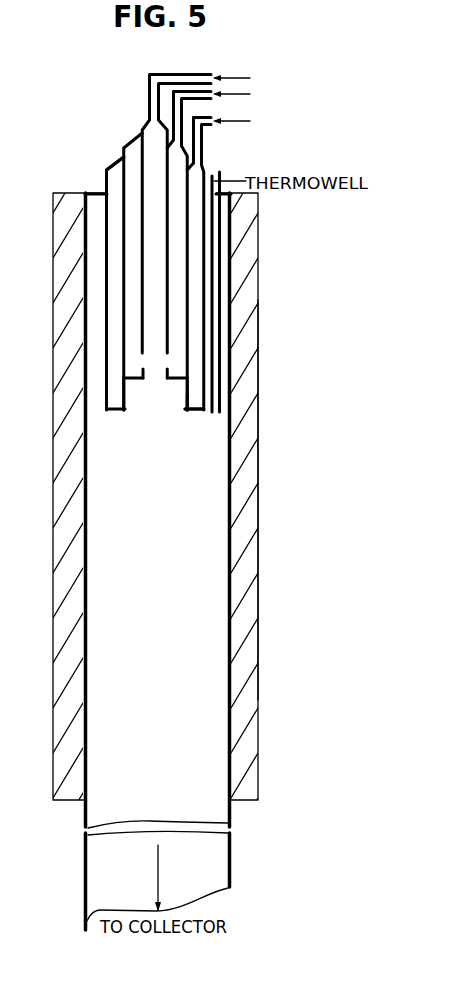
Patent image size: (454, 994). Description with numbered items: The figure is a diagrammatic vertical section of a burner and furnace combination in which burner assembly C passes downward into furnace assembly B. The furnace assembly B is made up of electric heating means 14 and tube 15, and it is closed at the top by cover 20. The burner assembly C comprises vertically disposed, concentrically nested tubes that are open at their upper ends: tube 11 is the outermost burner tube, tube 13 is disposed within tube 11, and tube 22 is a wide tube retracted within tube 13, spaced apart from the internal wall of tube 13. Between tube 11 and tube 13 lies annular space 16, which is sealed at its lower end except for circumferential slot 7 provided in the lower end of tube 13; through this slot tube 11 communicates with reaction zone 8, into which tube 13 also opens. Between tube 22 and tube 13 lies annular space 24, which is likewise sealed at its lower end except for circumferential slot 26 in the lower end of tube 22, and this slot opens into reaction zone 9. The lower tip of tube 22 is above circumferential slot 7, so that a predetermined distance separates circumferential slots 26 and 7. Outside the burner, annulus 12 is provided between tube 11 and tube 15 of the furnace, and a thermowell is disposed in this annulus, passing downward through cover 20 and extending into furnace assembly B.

The circumferential slot 7 is at (184, 403).
The reaction zone 8 is at (156, 401).
The reaction zone 9 is at (156, 381).
The tube 11 is at (125, 396).
The annulus 12 is at (98, 248).
The tube 13 is at (125, 341).
The electric heating means 14 is at (258, 422).
The tube 15 is at (227, 478).
The annular space 16 is at (117, 315).
The cover 20 is at (88, 194).
The tube 22 is at (165, 208).
The annular space 24 is at (133, 283).
The circumferential slot 26 is at (145, 372).
The furnace assembly B is at (259, 475).
The burner assembly C is at (101, 177).